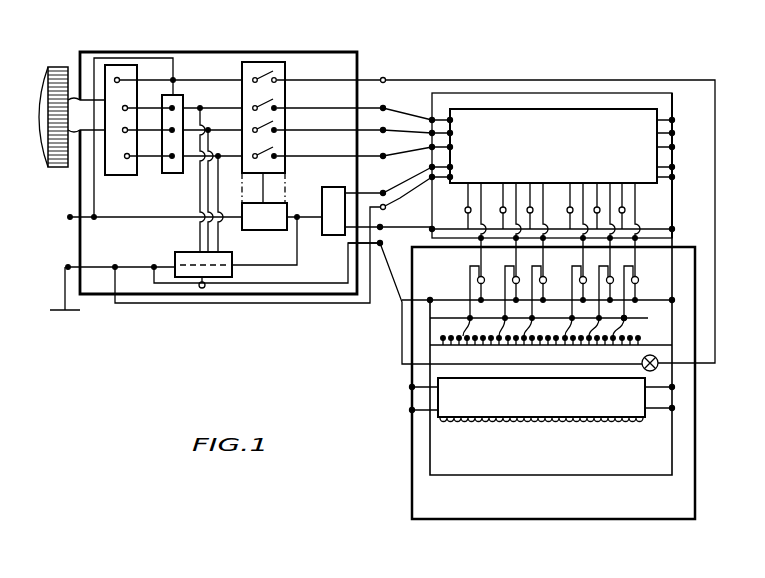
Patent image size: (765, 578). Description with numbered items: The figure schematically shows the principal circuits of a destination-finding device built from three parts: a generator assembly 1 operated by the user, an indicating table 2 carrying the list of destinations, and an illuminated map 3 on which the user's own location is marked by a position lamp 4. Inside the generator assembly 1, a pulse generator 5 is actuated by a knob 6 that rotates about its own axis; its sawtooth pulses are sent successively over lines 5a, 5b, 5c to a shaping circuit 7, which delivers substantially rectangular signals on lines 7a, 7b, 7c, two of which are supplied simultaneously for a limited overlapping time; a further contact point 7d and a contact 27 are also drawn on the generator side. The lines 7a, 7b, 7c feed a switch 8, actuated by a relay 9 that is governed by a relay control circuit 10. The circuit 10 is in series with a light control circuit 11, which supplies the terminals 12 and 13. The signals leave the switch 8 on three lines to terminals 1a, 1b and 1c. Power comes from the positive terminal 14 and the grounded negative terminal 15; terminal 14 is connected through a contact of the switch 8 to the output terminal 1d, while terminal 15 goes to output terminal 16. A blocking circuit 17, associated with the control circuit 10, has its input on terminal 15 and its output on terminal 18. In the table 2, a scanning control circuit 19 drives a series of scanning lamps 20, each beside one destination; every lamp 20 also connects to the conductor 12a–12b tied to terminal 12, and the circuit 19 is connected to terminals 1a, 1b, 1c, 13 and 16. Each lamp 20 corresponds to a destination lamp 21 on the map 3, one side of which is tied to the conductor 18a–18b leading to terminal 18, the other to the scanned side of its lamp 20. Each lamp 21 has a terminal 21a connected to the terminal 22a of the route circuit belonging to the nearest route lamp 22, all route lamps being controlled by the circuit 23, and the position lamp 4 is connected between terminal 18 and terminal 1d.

The generator assembly 1 is at (345, 49).
The output terminal 1a is at (384, 108).
The output terminal 1b is at (384, 128).
The output terminal 1c is at (384, 153).
The output terminal 1d is at (385, 78).
The indicating table 2 is at (613, 93).
The illuminated map 3 is at (633, 520).
The position lamp 4 is at (656, 369).
The pulse generator 5 is at (112, 66).
The line 5a is at (143, 107).
The line 5b is at (158, 132).
The line 5c is at (155, 163).
The knob 6 is at (55, 145).
The shaping circuit 7 is at (177, 97).
The line 7a is at (208, 108).
The line 7b is at (210, 130).
The line 7c is at (219, 156).
The contact 7d is at (174, 79).
The switch 8 is at (264, 62).
The relay 9 is at (258, 226).
The relay control circuit 10 is at (187, 256).
The light control circuit 11 is at (327, 220).
The terminal 12 is at (382, 229).
The conductor 12a is at (434, 227).
The conductor 12b is at (674, 231).
The terminal 13 is at (383, 191).
The positive terminal 14 is at (70, 217).
The negative terminal 15 is at (57, 253).
The output terminal 16 is at (386, 210).
The blocking circuit 17 is at (203, 289).
The terminal 18 is at (383, 245).
The conductor 18a is at (431, 299).
The conductor 18b is at (672, 300).
The scanning control circuit 19 is at (538, 153).
The scanning lamp 20 is at (625, 211).
The destination lamp 21 is at (638, 282).
The terminal 21a is at (627, 317).
The route lamp 22 is at (590, 424).
The terminal 22a is at (630, 335).
The route lamp control circuit 23 is at (526, 412).
The switch contact 27 is at (118, 77).